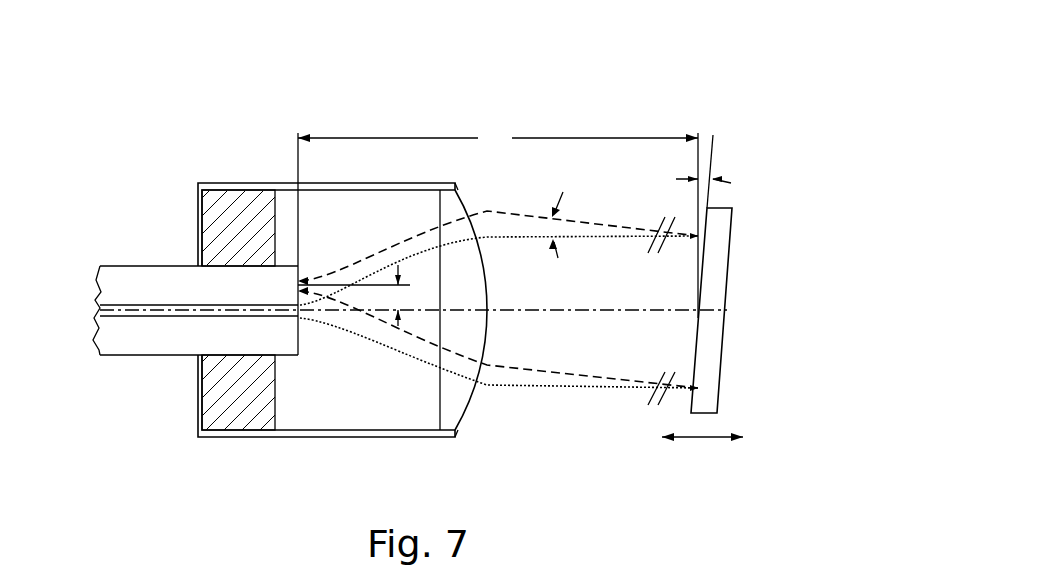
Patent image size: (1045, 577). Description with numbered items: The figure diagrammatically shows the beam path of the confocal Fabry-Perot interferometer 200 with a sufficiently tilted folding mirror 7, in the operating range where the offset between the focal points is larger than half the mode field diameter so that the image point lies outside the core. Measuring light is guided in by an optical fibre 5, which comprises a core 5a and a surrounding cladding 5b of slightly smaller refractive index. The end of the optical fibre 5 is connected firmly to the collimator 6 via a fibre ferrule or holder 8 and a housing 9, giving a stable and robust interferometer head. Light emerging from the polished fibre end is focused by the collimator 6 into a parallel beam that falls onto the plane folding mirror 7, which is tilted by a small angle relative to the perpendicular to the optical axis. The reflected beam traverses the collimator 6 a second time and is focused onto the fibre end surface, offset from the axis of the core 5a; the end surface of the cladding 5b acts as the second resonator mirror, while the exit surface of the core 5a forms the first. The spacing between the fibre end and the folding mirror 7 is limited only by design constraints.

The Fabry-Perot interferometer 200 is at (546, 97).
The optical fibre 5 is at (178, 265).
The core 5a is at (130, 318).
The cladding 5b is at (136, 282).
The fibre ferrule or holder 8 is at (214, 415).
The housing 9 is at (340, 438).
The collimator 6 is at (452, 414).
The folding mirror 7 is at (722, 272).